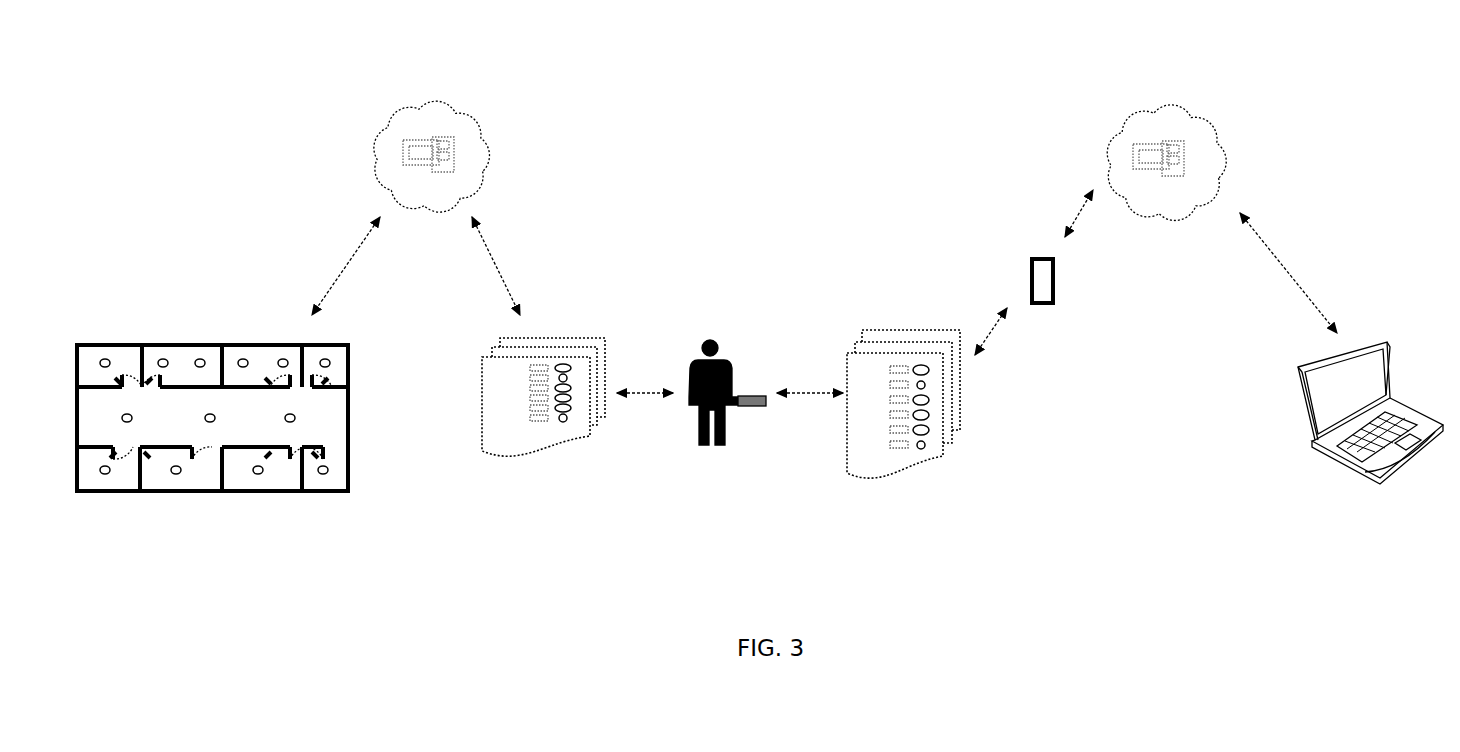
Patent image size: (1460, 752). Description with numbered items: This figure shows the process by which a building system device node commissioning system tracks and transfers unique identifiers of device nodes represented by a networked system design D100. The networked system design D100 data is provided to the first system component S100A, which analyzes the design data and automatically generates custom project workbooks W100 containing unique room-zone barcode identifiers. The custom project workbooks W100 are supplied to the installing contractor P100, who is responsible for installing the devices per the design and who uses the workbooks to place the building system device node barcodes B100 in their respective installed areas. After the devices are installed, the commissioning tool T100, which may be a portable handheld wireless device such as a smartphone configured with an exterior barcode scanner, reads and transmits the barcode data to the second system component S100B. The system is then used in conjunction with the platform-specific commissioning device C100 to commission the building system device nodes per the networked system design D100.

The networked system design D100 is at (197, 334).
The first system component S100A is at (428, 93).
The second system component S100B is at (1160, 97).
The custom project workbook W100 is at (540, 334).
The installing contractor P100 is at (713, 326).
The building system device node barcode B100 is at (765, 409).
The commissioning tool T100 is at (1060, 286).
The platform-specific commissioning device C100 is at (1385, 330).